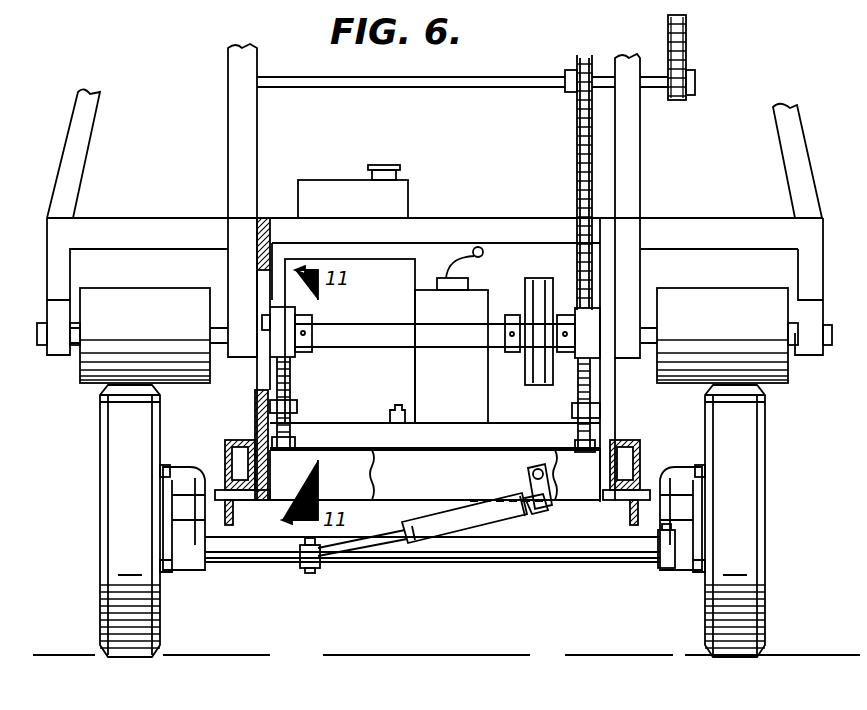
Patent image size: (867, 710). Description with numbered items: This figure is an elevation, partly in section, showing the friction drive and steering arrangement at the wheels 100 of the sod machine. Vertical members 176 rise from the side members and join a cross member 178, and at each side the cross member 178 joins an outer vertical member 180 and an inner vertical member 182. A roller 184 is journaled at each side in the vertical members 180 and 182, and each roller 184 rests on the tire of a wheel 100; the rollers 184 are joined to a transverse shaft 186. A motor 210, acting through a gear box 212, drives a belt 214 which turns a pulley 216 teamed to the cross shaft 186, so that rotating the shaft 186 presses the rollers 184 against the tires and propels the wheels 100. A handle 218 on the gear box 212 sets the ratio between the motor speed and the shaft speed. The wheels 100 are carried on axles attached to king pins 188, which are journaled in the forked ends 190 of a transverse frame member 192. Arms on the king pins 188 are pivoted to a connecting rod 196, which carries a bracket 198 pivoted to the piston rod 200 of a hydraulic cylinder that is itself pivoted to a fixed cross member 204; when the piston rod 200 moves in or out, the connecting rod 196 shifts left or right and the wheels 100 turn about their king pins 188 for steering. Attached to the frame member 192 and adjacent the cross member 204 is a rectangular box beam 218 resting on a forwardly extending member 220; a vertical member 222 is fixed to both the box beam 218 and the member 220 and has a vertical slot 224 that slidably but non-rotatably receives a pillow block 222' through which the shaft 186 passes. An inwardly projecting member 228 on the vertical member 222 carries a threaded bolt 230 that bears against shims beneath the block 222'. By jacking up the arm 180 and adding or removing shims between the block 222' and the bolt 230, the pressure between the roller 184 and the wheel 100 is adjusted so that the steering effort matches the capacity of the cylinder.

The wheel 100 is at (120, 462).
The vertical member 176 is at (222, 78).
The cross member 178 is at (428, 218).
The outer vertical member 180 is at (50, 272).
The inner vertical member 182 is at (228, 265).
The roller 184 is at (160, 333).
The transverse shaft 186 is at (440, 340).
The king pin 188 is at (167, 468).
The forked end 190 is at (688, 468).
The transverse frame member 192 is at (585, 536).
The connecting rod 196 is at (372, 560).
The bracket 198 is at (305, 570).
The piston rod 200 is at (382, 537).
The fixed cross member 204 is at (482, 491).
The motor 210 is at (395, 293).
The gear box 212 is at (462, 323).
The belt 214 is at (536, 280).
The pulley 216 is at (512, 356).
The handle / rectangular box beam 218 is at (468, 262).
The forwardly extending member 220 is at (222, 492).
The vertical member 222 is at (281, 323).
The pillow block 222' is at (431, 330).
The vertical slot 224 is at (258, 368).
The inwardly projecting member 228 is at (297, 407).
The bolt 230 is at (292, 390).